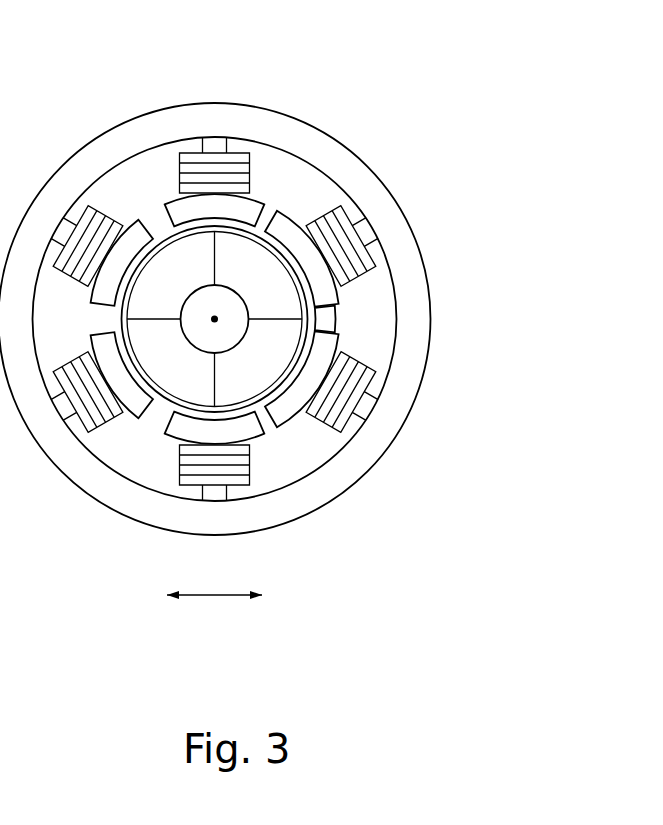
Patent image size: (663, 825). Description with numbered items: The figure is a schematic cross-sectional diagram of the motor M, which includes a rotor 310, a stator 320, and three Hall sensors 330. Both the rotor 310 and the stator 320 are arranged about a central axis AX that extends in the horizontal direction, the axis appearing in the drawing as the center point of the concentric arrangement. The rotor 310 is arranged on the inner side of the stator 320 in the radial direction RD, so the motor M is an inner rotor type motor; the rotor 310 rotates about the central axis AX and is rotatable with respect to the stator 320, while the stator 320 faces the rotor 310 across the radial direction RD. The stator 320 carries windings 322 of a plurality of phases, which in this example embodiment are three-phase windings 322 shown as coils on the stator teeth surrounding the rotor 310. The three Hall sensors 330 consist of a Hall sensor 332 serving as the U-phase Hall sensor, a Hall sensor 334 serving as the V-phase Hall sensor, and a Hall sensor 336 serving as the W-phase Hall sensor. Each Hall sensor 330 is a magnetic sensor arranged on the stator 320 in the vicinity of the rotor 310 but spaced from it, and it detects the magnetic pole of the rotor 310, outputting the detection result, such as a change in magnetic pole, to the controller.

The motor M is at (272, 281).
The rotor 310 is at (173, 247).
The stator 320 is at (152, 514).
The windings 322 is at (180, 170).
The Hall sensors 330 is at (289, 329).
The Hall sensor 332 is at (274, 216).
The Hall sensor 334 is at (335, 319).
The Hall sensor 336 is at (272, 425).
The central axis AX is at (214, 319).
The radial direction RD is at (215, 597).